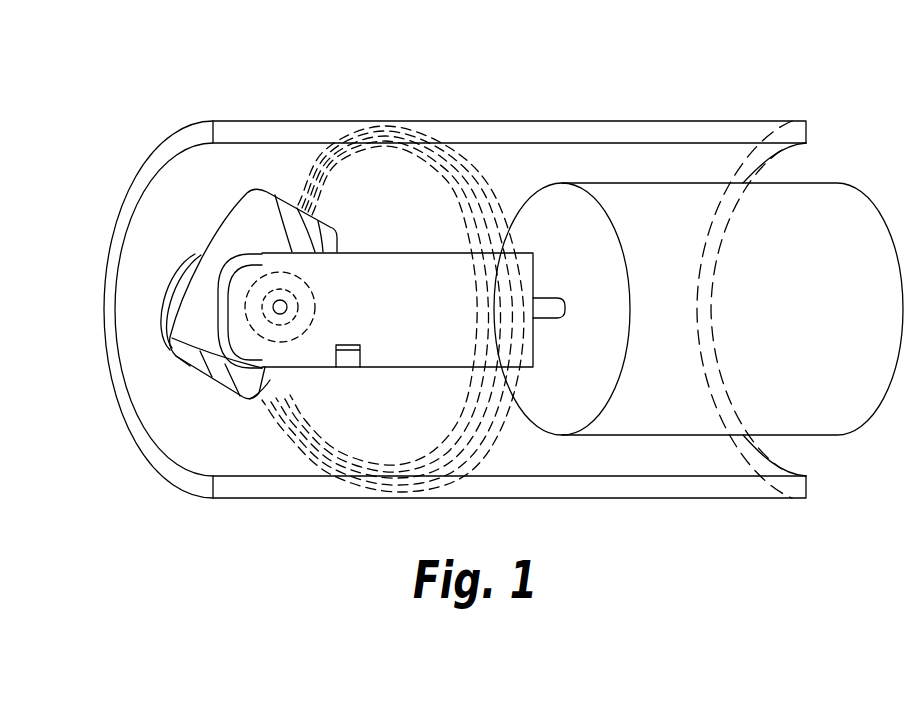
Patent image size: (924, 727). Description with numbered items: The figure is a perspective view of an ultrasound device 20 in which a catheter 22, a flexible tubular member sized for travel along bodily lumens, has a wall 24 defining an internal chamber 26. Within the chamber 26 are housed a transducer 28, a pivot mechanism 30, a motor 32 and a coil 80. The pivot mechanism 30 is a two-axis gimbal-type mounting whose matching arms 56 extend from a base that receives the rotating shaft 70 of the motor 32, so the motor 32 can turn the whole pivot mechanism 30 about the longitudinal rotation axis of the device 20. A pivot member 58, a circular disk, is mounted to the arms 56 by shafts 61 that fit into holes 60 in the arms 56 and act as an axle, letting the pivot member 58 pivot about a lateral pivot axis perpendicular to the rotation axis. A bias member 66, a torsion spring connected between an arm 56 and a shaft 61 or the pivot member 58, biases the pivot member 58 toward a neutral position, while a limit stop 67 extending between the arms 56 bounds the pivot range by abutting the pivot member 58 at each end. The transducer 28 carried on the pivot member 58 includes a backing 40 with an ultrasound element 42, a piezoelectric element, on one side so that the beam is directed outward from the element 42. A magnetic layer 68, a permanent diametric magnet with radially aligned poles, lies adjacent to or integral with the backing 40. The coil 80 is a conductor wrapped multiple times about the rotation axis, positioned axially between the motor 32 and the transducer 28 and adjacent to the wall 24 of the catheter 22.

The device 20 is at (457, 107).
The catheter 22 is at (620, 118).
The wall 24 is at (695, 118).
The internal chamber 26 is at (212, 190).
The transducer 28 is at (192, 378).
The pivot mechanism 30 is at (473, 418).
The motor 32 is at (702, 423).
The backing 40 is at (328, 212).
The ultrasound element 42 is at (190, 302).
The arms 56 is at (395, 276).
The pivot member 58 is at (204, 238).
The holes 60 is at (283, 303).
The shafts 61 is at (279, 305).
The bias member 66 is at (272, 402).
The limit stop 67 is at (352, 366).
The magnetic layer 68 is at (342, 206).
The shaft 70 is at (549, 320).
The coil 80 is at (437, 198).